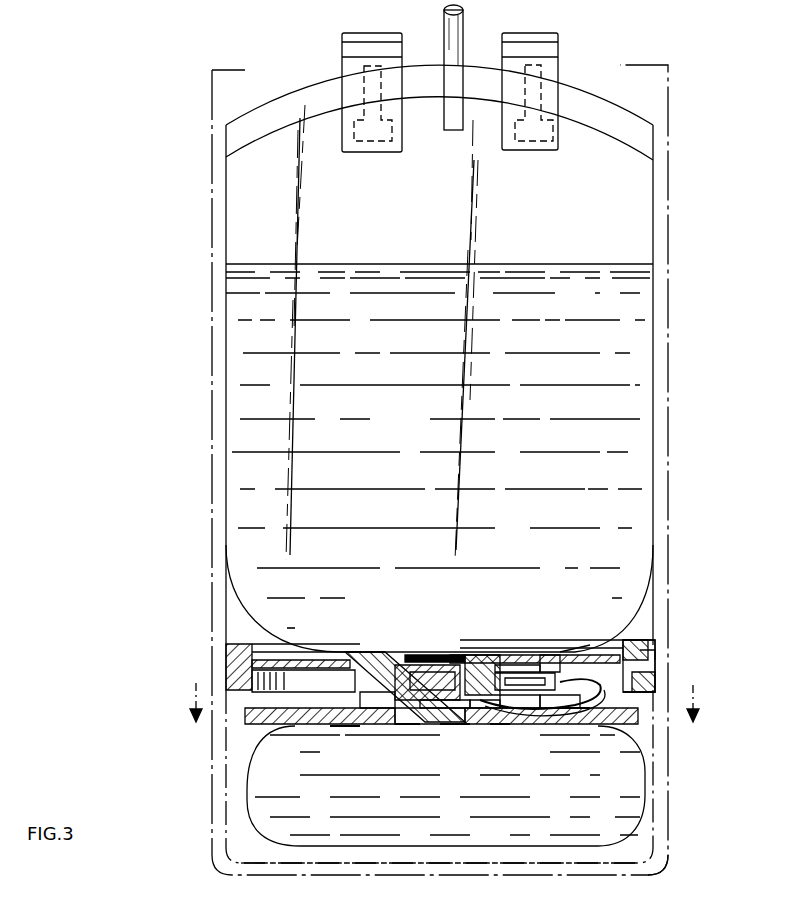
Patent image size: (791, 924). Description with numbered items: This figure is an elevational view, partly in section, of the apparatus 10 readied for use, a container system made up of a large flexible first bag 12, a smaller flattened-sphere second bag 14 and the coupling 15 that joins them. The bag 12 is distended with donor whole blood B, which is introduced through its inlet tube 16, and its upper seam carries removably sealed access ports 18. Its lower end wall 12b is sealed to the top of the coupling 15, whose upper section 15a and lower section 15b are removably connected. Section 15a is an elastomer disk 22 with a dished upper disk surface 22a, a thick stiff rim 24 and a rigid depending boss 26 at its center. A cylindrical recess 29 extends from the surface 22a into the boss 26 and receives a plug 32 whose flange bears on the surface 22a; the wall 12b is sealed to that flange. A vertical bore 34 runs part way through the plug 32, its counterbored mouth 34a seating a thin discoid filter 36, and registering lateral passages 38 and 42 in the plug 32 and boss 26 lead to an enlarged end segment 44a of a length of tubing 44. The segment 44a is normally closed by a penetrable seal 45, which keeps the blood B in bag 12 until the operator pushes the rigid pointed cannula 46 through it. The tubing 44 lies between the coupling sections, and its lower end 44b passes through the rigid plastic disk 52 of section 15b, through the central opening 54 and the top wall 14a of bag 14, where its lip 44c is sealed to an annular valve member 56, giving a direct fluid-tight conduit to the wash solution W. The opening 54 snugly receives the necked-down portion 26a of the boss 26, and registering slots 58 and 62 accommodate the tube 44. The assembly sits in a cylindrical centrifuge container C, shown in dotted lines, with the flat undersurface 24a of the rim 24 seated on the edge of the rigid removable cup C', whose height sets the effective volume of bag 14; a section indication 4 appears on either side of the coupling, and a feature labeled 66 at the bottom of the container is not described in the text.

The apparatus 10 is at (146, 515).
The first container 12 is at (240, 308).
The lower end wall 12b is at (570, 650).
The second container 14 is at (248, 793).
The upper surface 14a is at (346, 728).
The coupling 15 is at (164, 694).
The upper section 15a is at (213, 664).
The lower section 15b is at (205, 750).
The inlet tube 16 is at (464, 32).
The access ports 18 is at (342, 62).
The disk 22 is at (650, 656).
The upper disk surface 22a is at (640, 641).
The rim 24 is at (226, 648).
The flat undersurface 24a is at (642, 694).
The boss 26 is at (545, 722).
The necked-down portion 26a is at (442, 724).
The cylindrical recess 29 is at (366, 652).
The plug 32 is at (405, 652).
The vertical bore 34 is at (452, 660).
The counterbore 34a is at (468, 665).
The filter 36 is at (430, 655).
The lateral passage 38 is at (496, 655).
The lateral passage 42 is at (512, 726).
The tubing 44 is at (585, 722).
The enlarged end segment 44a is at (522, 664).
The lower end 44b is at (484, 724).
The lower edge or lip 44c is at (455, 726).
The penetrable seal 45 is at (537, 672).
The cannula 46 is at (549, 655).
The disk 52 is at (279, 728).
The central opening 54 is at (393, 726).
The annular valve member 56 is at (402, 726).
The slot 58 is at (498, 726).
The slot 62 is at (568, 726).
The container bottom 66 is at (303, 856).
The section line 4- 4 is at (443, 690).
The donor whole blood B is at (408, 429).
The wash solution W is at (436, 844).
The centrifuge container C is at (460, 470).
The removable cup C' is at (683, 849).